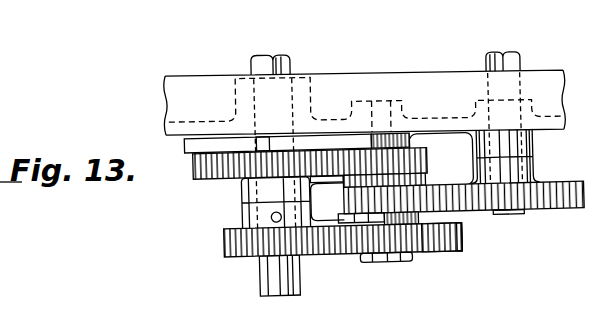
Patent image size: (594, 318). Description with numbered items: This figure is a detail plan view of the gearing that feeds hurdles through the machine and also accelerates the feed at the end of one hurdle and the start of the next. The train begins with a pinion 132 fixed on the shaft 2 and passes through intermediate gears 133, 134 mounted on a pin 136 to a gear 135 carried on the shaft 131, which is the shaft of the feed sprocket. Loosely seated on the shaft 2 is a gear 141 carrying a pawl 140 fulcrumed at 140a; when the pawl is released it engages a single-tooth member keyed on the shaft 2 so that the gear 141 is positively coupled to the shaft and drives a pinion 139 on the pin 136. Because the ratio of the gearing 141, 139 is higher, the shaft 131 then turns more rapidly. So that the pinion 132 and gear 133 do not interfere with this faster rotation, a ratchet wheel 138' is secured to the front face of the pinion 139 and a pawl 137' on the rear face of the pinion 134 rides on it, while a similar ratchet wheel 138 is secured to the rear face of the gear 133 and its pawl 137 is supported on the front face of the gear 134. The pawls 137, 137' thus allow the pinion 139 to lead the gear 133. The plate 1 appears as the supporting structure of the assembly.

The slotted plate 1 is at (557, 101).
The shaft 2 is at (298, 275).
The shaft 131 is at (510, 216).
The pinion 132 is at (238, 234).
The intermediate gear 133 is at (462, 247).
The intermediate gear 134 is at (445, 230).
The gear 135 is at (557, 216).
The pin 136 is at (393, 254).
The pawl 137 is at (379, 273).
The pawl 137' is at (339, 147).
The ratchet wheel 138 is at (431, 219).
The ratchet wheel 138' is at (411, 173).
The pinion 139 is at (430, 158).
The pawl 140 is at (208, 146).
The fulcrum of pawl 140a is at (262, 141).
The gear 141 is at (215, 169).